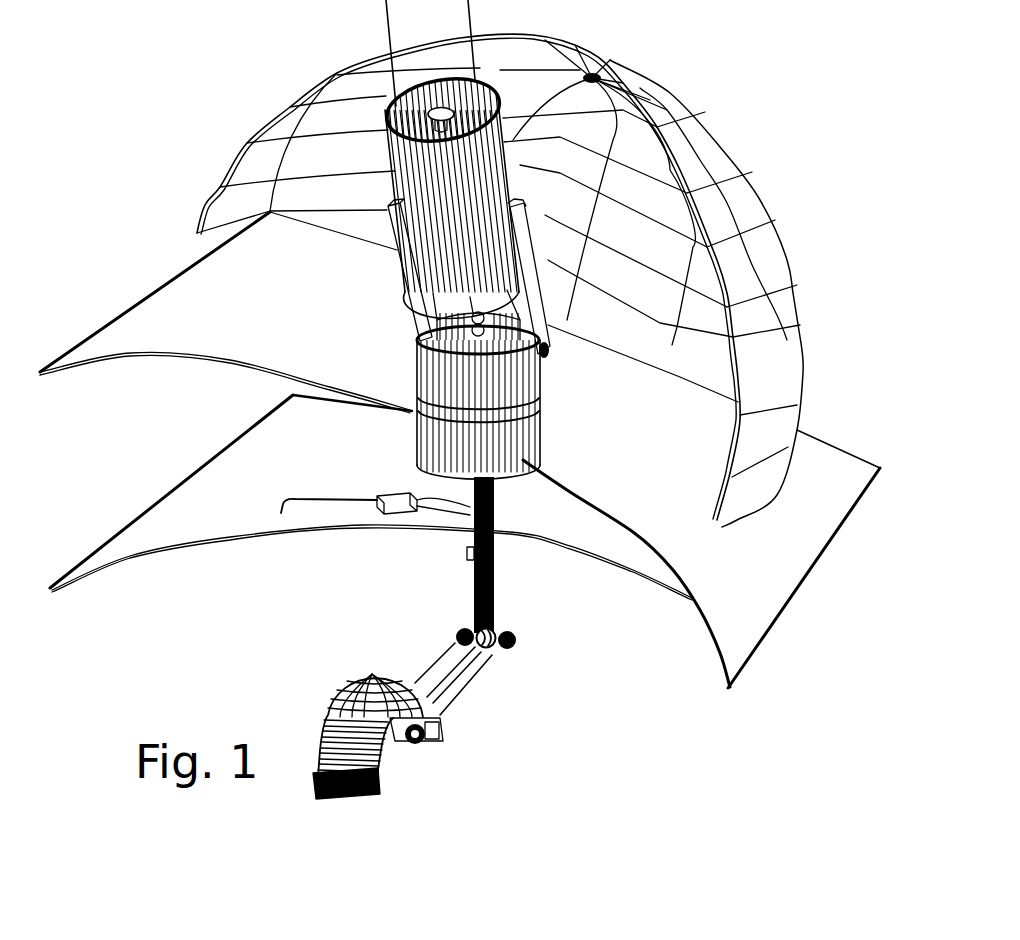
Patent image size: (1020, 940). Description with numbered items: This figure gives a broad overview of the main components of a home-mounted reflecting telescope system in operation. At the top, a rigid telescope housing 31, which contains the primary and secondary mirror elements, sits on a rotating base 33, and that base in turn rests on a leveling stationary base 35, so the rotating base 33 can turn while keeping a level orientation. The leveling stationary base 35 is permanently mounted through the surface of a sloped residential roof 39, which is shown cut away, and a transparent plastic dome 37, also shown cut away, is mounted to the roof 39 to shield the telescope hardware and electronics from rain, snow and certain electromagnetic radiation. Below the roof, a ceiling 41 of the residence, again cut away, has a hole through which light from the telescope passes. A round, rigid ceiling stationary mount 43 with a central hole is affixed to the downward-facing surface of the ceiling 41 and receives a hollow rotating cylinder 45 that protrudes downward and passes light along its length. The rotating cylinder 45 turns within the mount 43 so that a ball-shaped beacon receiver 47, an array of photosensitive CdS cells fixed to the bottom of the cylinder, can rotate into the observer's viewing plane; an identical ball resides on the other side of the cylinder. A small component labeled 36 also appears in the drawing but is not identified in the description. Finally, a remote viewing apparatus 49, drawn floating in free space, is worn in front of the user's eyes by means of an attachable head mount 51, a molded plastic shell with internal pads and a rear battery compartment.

The telescope housing 31 is at (513, 143).
The rotating base 33 is at (523, 387).
The leveling stationary base 35 is at (518, 438).
The electrical connector 36 is at (377, 507).
The dome 37 is at (780, 420).
The roof 39 is at (832, 478).
The ceiling 41 is at (617, 548).
The ceiling stationary mount 43 is at (600, 533).
The rotating cylinder 45 is at (497, 577).
The beacon receiver 47 is at (513, 643).
The remote viewing apparatus 49 is at (442, 728).
The attachable head mount 51 is at (380, 767).